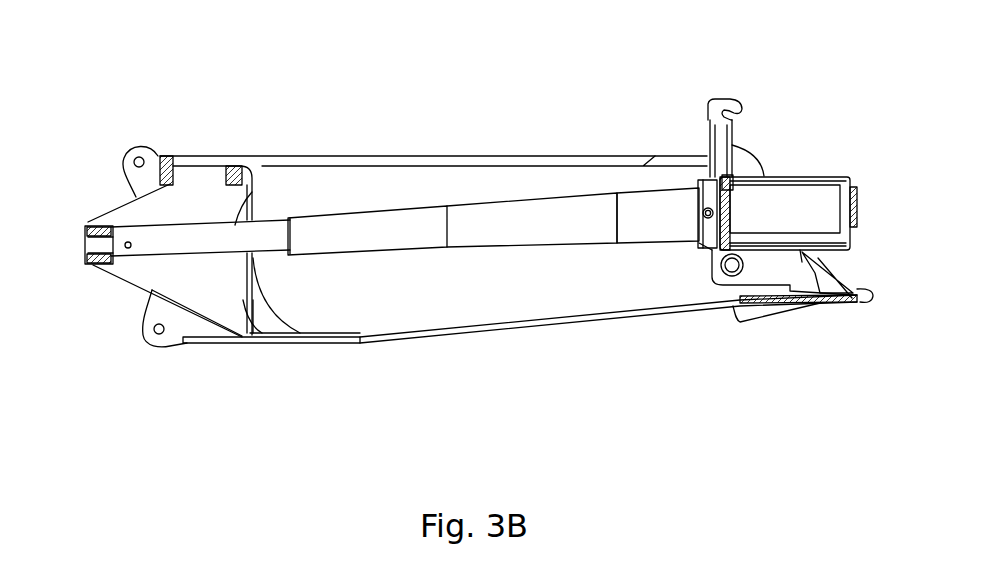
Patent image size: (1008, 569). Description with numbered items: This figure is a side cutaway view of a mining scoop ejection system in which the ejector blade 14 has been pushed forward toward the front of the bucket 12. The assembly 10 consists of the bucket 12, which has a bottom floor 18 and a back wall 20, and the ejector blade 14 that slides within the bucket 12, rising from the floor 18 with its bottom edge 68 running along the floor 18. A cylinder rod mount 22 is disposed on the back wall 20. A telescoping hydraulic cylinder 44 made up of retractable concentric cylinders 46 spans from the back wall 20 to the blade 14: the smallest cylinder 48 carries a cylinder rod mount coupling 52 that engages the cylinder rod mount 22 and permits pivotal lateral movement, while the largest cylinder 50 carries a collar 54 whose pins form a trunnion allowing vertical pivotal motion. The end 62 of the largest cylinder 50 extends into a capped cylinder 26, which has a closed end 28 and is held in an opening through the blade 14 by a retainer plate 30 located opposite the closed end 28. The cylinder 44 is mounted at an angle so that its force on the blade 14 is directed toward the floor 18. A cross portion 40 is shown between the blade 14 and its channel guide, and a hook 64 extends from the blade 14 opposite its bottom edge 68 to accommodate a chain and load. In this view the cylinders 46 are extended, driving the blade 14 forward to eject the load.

The assembly 10 is at (668, 76).
The bucket 12 is at (232, 84).
The ejector blade 14 is at (735, 147).
The bottom floor 18 is at (423, 325).
The back wall 20 is at (258, 318).
The cylinder rod mount 22 is at (95, 266).
The capped cylinder 26 is at (789, 178).
The closed end 28 is at (858, 190).
The retainer plate 30 is at (711, 267).
The cross portion 40 is at (833, 263).
The telescoping hydraulic cylinder 44 is at (477, 195).
The retractable concentric cylinders 46 is at (272, 254).
The smallest cylinder 48 is at (200, 238).
The largest cylinder 50 is at (658, 215).
The cylinder rod mount coupling 52 is at (90, 240).
The collar 54 is at (705, 185).
The end of the largest cylinder 62 is at (785, 209).
The hook 64 is at (736, 100).
The bottom edge 68 is at (868, 292).